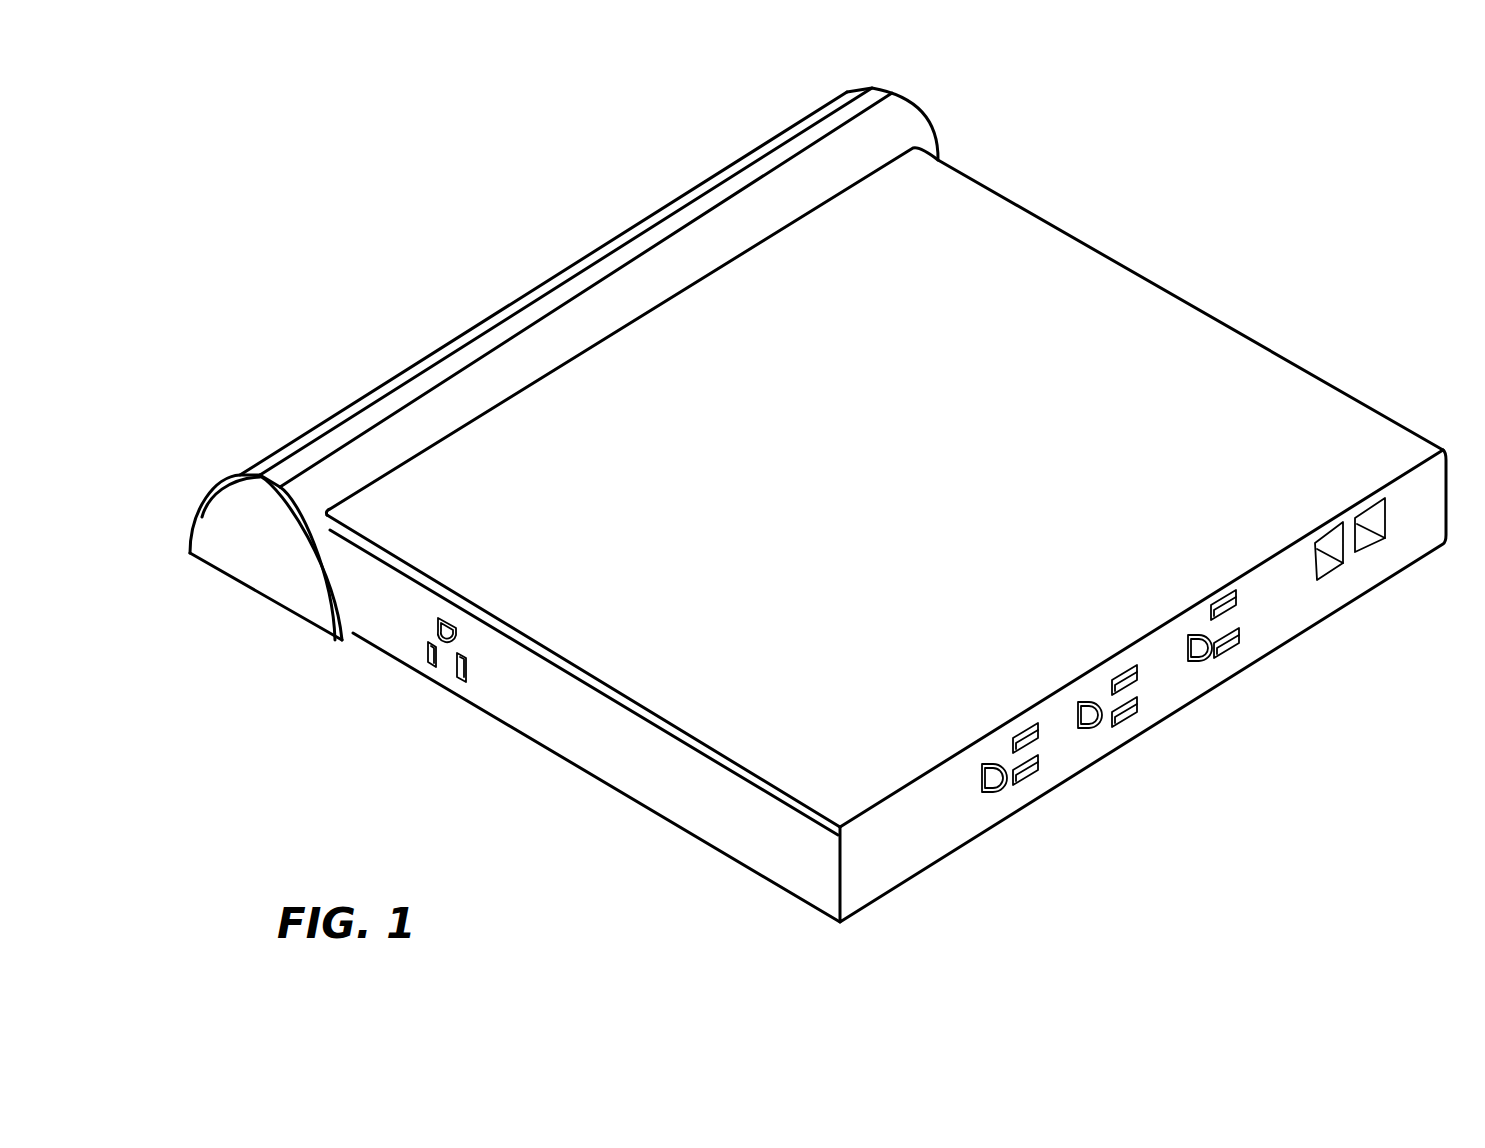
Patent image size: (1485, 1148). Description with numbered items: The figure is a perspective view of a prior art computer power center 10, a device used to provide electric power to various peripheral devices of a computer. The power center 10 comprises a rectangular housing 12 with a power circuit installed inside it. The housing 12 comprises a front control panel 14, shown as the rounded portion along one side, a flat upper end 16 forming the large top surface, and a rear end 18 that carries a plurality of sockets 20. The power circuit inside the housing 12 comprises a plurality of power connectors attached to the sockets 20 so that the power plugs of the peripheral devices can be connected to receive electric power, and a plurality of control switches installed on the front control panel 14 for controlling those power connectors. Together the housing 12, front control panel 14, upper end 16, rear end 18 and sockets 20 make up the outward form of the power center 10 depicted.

The computer power center 10 is at (1232, 125).
The rectangular housing 12 is at (585, 740).
The front control panel 14 is at (652, 247).
The flat upper end 16 is at (883, 507).
The rear end 18 is at (930, 847).
The sockets 20 is at (1022, 775).